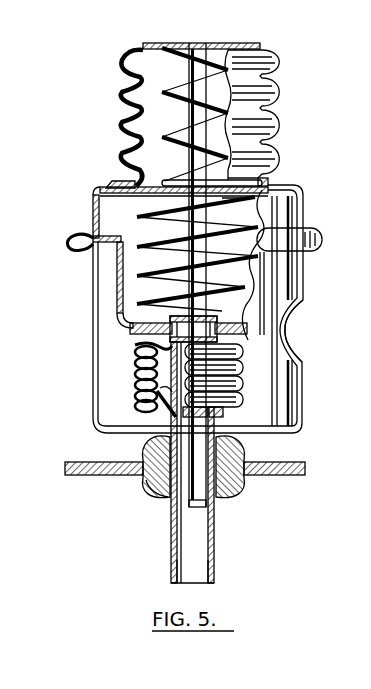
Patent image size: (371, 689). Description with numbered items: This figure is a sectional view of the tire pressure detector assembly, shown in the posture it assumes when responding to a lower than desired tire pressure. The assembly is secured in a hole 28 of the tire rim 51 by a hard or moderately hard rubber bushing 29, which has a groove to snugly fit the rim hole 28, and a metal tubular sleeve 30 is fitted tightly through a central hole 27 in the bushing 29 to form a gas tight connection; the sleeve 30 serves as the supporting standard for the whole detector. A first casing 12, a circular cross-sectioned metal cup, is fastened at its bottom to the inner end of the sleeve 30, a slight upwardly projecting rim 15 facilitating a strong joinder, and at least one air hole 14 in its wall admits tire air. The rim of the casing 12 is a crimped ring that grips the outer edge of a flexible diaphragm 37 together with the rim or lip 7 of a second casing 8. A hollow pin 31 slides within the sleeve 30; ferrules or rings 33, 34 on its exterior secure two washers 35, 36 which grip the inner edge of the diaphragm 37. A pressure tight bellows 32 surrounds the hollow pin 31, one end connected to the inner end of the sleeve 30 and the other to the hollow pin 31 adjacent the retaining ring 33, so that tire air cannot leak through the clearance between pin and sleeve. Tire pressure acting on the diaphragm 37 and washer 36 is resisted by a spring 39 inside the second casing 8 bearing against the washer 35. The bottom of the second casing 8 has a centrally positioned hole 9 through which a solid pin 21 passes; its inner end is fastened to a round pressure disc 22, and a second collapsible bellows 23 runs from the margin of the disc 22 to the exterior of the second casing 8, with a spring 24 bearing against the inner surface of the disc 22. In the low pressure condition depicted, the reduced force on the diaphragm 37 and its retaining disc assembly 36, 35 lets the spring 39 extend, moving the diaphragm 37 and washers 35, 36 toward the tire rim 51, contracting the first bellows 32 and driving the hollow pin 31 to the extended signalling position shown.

The rim or lip 7 is at (75, 234).
The second casing 8 is at (95, 213).
The centrally positioned hole 9 is at (183, 184).
The first casing 12 is at (92, 377).
The air hole 14 is at (289, 332).
The upwardly projecting rim 15 is at (160, 419).
The solid pin 21 is at (193, 231).
The pressure plate or disc 22 is at (213, 47).
The second collapsible bellows 23 is at (276, 57).
The spring 24 is at (196, 44).
The central hole 27 is at (170, 496).
The hole 28 is at (157, 483).
The rubber bushing 29 is at (246, 440).
The tubular sleeve 30 is at (174, 505).
The hollow pin 31 is at (174, 574).
The pressure tight bellows 32 is at (134, 379).
The retaining ring 33 is at (226, 361).
The ring 34 is at (216, 303).
The washer 35 is at (120, 318).
The retaining washer 36 is at (138, 345).
The flexible diaphragm 37 is at (119, 291).
The spring 39 is at (221, 199).
The tire rim 51 is at (258, 478).